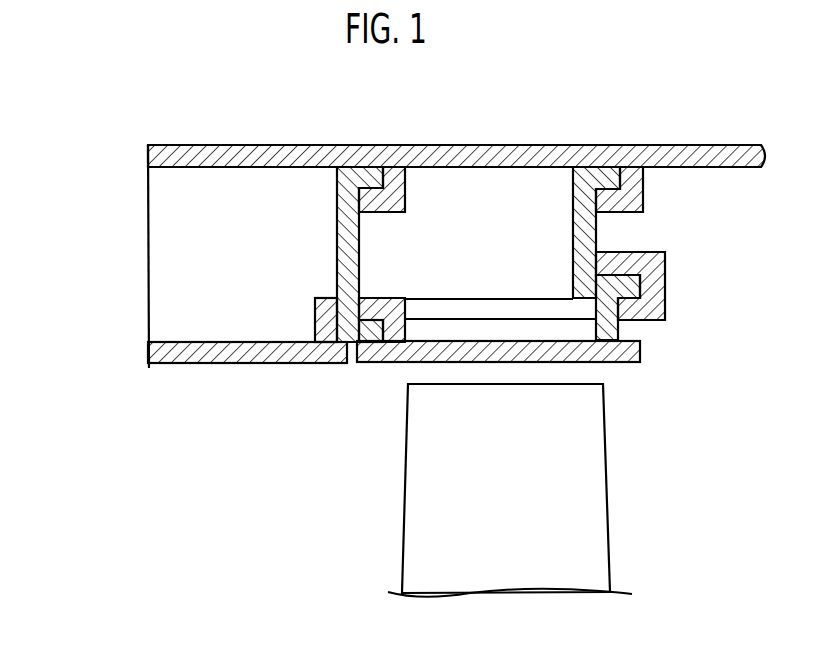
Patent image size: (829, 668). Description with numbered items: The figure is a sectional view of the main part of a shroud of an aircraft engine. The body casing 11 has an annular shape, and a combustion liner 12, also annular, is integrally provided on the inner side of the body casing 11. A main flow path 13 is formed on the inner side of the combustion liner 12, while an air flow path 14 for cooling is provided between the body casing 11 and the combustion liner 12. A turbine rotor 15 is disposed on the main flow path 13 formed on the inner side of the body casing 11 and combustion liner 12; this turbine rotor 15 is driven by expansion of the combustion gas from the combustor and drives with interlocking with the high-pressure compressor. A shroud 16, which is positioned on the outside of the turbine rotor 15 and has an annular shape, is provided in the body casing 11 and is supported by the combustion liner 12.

The body casing 11 is at (272, 137).
The combustion liner 12 is at (240, 363).
The main flow path 13 is at (327, 497).
The air flow path 14 is at (176, 248).
The turbine rotor 15 is at (575, 494).
The shroud 16 is at (638, 350).